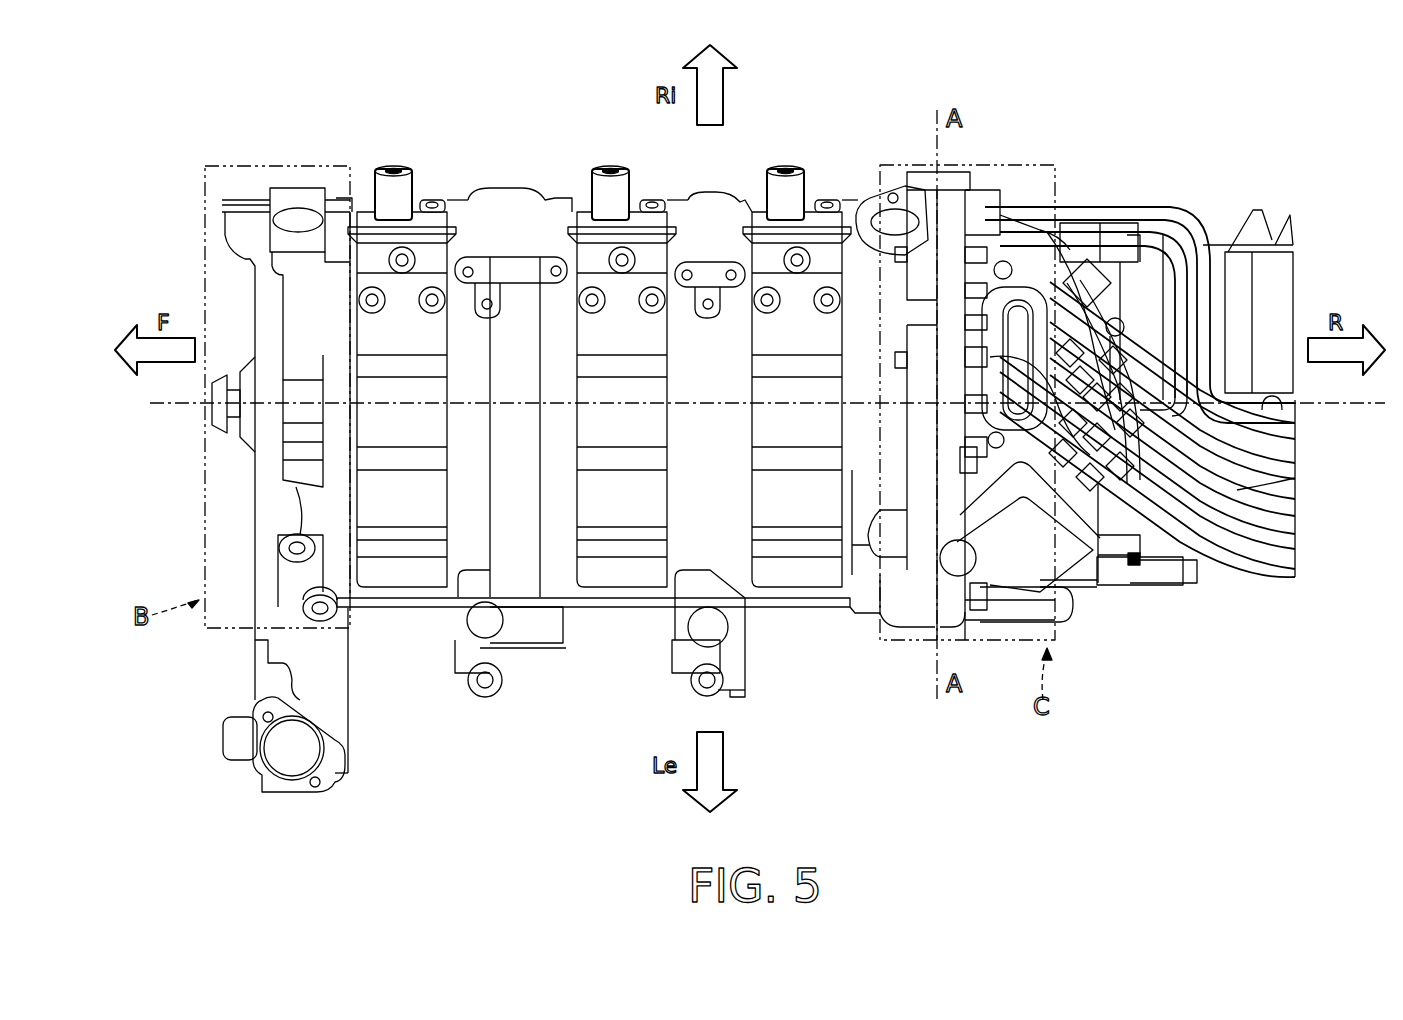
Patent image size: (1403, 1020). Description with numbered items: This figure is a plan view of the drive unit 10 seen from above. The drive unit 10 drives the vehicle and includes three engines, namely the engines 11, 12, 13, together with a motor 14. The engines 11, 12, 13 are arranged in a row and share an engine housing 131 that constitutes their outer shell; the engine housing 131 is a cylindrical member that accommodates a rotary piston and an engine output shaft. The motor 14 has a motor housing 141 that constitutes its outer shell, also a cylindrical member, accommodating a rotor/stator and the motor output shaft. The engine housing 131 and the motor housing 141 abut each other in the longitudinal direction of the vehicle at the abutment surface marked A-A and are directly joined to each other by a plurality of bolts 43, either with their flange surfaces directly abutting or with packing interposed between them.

The drive unit 10 is at (226, 151).
The engine 11 is at (400, 583).
The engine 12 is at (620, 583).
The engine 13 is at (803, 583).
The motor 14 is at (975, 580).
The engine housing 131 is at (862, 255).
The motor housing 141 is at (1032, 230).
The bolts 43 is at (1115, 420).